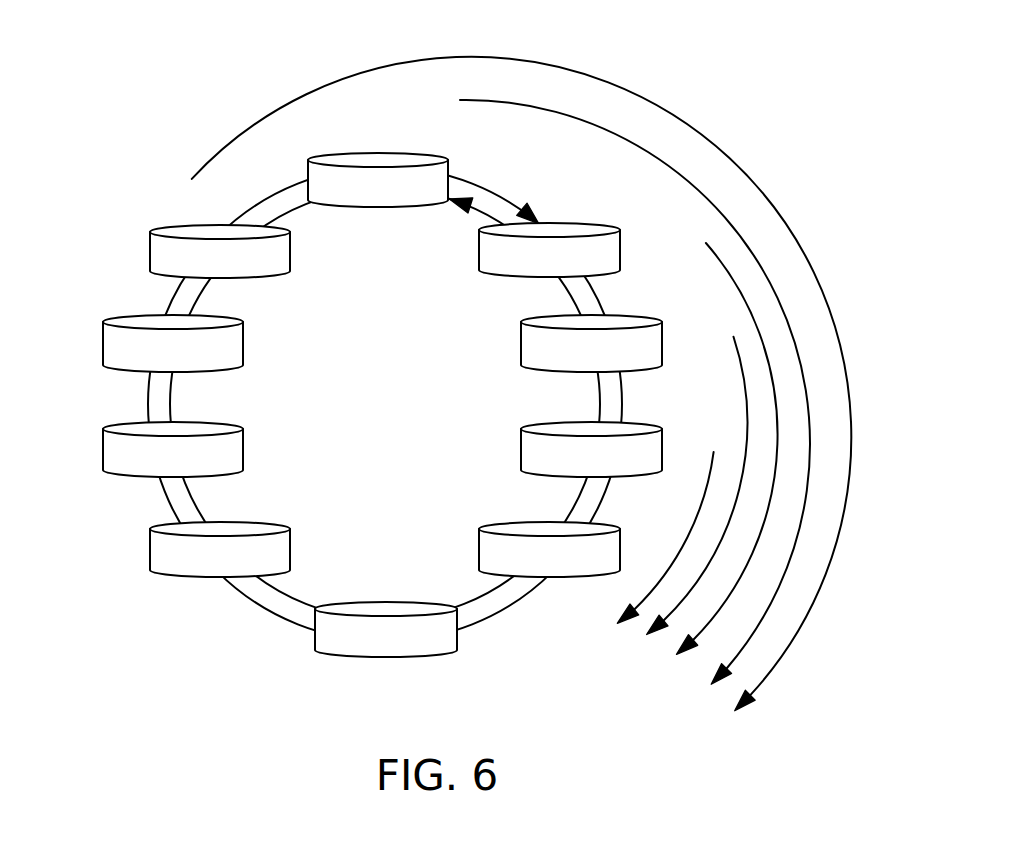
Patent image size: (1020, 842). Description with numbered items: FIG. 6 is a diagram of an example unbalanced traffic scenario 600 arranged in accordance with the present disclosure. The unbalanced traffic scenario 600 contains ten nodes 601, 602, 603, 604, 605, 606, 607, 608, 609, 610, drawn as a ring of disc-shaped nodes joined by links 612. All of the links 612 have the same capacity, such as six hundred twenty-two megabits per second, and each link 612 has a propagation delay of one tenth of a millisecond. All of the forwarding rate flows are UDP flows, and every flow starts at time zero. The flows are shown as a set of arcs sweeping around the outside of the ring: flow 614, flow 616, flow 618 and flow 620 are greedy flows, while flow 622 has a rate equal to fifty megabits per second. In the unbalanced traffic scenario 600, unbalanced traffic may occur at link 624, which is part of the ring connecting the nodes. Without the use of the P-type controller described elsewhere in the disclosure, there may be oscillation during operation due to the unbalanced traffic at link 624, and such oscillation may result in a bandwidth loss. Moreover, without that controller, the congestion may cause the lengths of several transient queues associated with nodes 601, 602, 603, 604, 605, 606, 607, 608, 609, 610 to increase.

The unbalanced traffic scenario 600 is at (765, 150).
The node 601 is at (403, 212).
The node 602 is at (477, 258).
The node 603 is at (521, 350).
The node 604 is at (521, 442).
The node 605 is at (480, 540).
The node 606 is at (360, 658).
The node 607 is at (150, 535).
The node 608 is at (102, 442).
The node 609 is at (102, 350).
The node 610 is at (150, 250).
The link 612 is at (488, 183).
The flow 614 is at (622, 93).
The flow 616 is at (698, 200).
The flow 618 is at (743, 310).
The flow 620 is at (743, 420).
The flow 622 is at (648, 593).
The link 624 is at (608, 483).